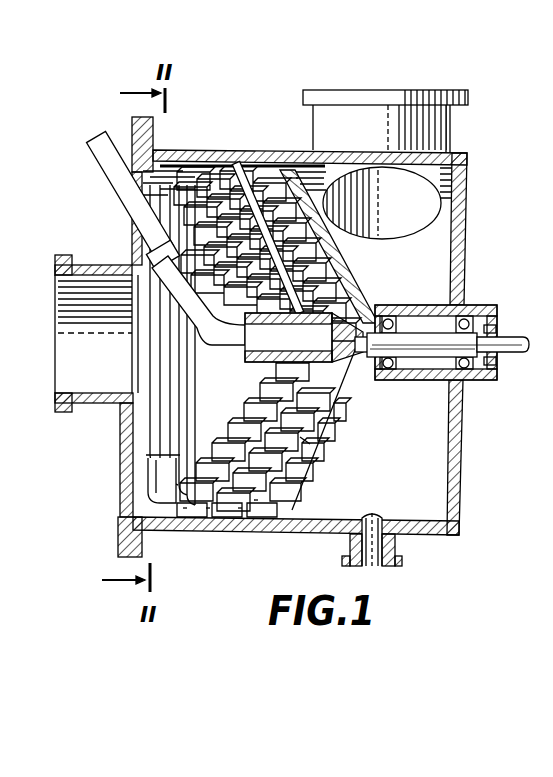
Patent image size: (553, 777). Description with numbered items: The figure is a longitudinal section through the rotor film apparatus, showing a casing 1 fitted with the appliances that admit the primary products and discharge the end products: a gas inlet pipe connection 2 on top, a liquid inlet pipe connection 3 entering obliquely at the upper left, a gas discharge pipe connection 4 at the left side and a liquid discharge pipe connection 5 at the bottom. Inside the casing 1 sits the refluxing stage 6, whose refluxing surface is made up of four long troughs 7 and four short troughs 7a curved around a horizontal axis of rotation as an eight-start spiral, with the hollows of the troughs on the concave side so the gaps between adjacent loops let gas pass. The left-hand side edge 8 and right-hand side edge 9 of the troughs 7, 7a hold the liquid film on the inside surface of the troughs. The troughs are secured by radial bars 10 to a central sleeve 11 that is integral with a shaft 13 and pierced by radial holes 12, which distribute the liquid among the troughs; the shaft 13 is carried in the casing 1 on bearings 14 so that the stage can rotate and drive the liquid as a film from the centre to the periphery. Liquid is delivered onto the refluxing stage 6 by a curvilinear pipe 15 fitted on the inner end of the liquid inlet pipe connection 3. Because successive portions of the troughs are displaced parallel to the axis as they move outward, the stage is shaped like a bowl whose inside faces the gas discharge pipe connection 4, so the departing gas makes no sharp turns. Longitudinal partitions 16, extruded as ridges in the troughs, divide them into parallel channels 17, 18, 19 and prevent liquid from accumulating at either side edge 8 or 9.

The casing 1 is at (456, 456).
The gas inlet pipe connection 2 is at (315, 128).
The liquid inlet pipe connection 3 is at (136, 203).
The gas discharge pipe connection 4 is at (59, 408).
The liquid discharge pipe connection 5 is at (398, 558).
The refluxing stage 6 is at (356, 280).
The long troughs 7 is at (272, 504).
The short troughs 7a is at (308, 438).
The left-hand side edge 8 is at (136, 170).
The right-hand side edge 9 is at (296, 176).
The radial bars 10 is at (236, 163).
The central sleeve 11 is at (352, 364).
The radial holes 12 is at (246, 353).
The shaft 13 is at (506, 343).
The bearings 14 is at (466, 378).
The curvilinear pipe 15 is at (183, 317).
The longitudinal partitions 16 is at (206, 163).
The parallel channel 17 is at (185, 512).
The parallel channel 18 is at (208, 512).
The parallel channel 19 is at (254, 506).